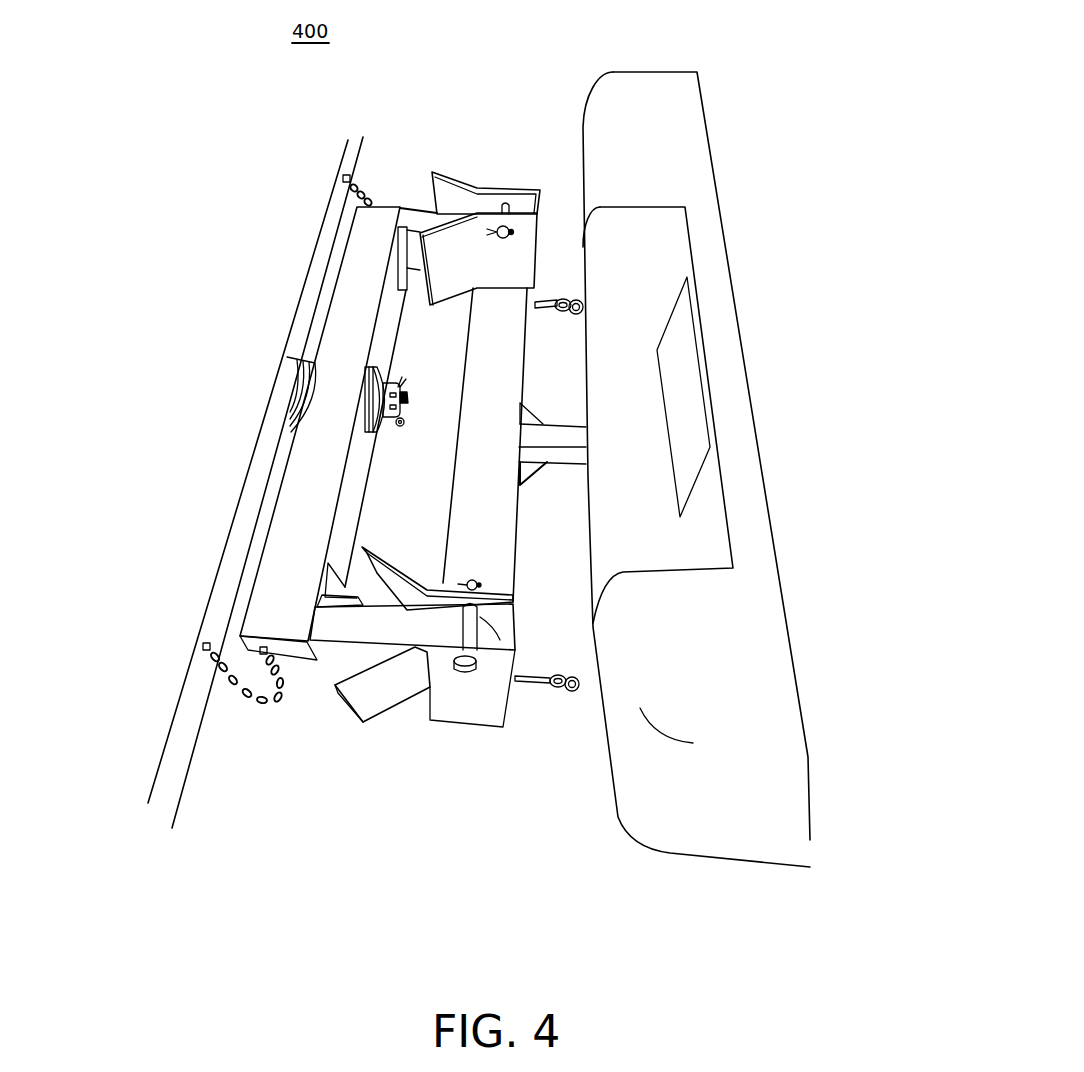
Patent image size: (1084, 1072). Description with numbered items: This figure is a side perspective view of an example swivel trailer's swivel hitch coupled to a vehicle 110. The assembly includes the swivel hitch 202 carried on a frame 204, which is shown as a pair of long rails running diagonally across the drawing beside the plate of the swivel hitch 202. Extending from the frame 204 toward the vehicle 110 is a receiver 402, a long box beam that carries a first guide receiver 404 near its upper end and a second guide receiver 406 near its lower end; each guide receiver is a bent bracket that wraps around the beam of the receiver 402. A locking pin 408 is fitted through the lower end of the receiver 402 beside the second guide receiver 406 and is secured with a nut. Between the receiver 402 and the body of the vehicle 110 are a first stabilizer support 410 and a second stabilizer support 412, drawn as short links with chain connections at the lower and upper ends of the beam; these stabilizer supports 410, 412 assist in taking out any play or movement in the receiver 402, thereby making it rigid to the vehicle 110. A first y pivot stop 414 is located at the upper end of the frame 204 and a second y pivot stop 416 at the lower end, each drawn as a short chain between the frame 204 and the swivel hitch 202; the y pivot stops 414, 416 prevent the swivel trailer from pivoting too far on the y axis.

The vehicle 110 is at (743, 615).
The swivel hitch 202 is at (298, 537).
The frame 204 is at (172, 778).
The receiver 402 is at (493, 405).
The first guide receiver 404 is at (445, 170).
The second guide receiver 406 is at (348, 688).
The locking pin 408 is at (462, 665).
The first stabilizer support 410 is at (565, 720).
The second stabilizer support 412 is at (567, 258).
The first y pivot stop 414 is at (352, 185).
The second y pivot stop 416 is at (270, 707).